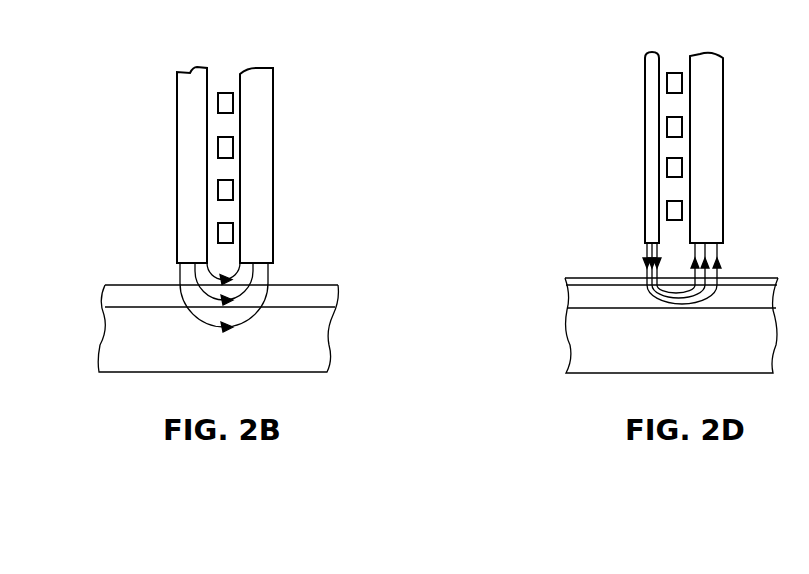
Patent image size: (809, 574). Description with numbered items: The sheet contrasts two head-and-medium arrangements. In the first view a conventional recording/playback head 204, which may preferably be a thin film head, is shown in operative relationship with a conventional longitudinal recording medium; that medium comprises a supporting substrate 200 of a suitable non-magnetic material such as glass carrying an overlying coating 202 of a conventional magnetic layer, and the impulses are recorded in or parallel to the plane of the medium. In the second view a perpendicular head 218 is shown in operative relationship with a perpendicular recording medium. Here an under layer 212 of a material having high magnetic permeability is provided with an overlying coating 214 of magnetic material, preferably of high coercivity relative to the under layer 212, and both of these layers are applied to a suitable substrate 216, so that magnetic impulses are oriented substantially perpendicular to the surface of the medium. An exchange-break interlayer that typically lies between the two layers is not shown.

In FIG. 2B, the supporting substrate 200 is at (113, 363).
In FIG. 2B, the overlying coating 202 is at (140, 293).
In FIG. 2B, the recording/playback head 204 is at (177, 163).
In FIG. 2D, the under layer 212 is at (572, 296).
In FIG. 2D, the overlying coating 214 is at (588, 278).
In FIG. 2D, the substrate 216 is at (643, 362).
In FIG. 2D, the perpendicular head 218 is at (723, 173).